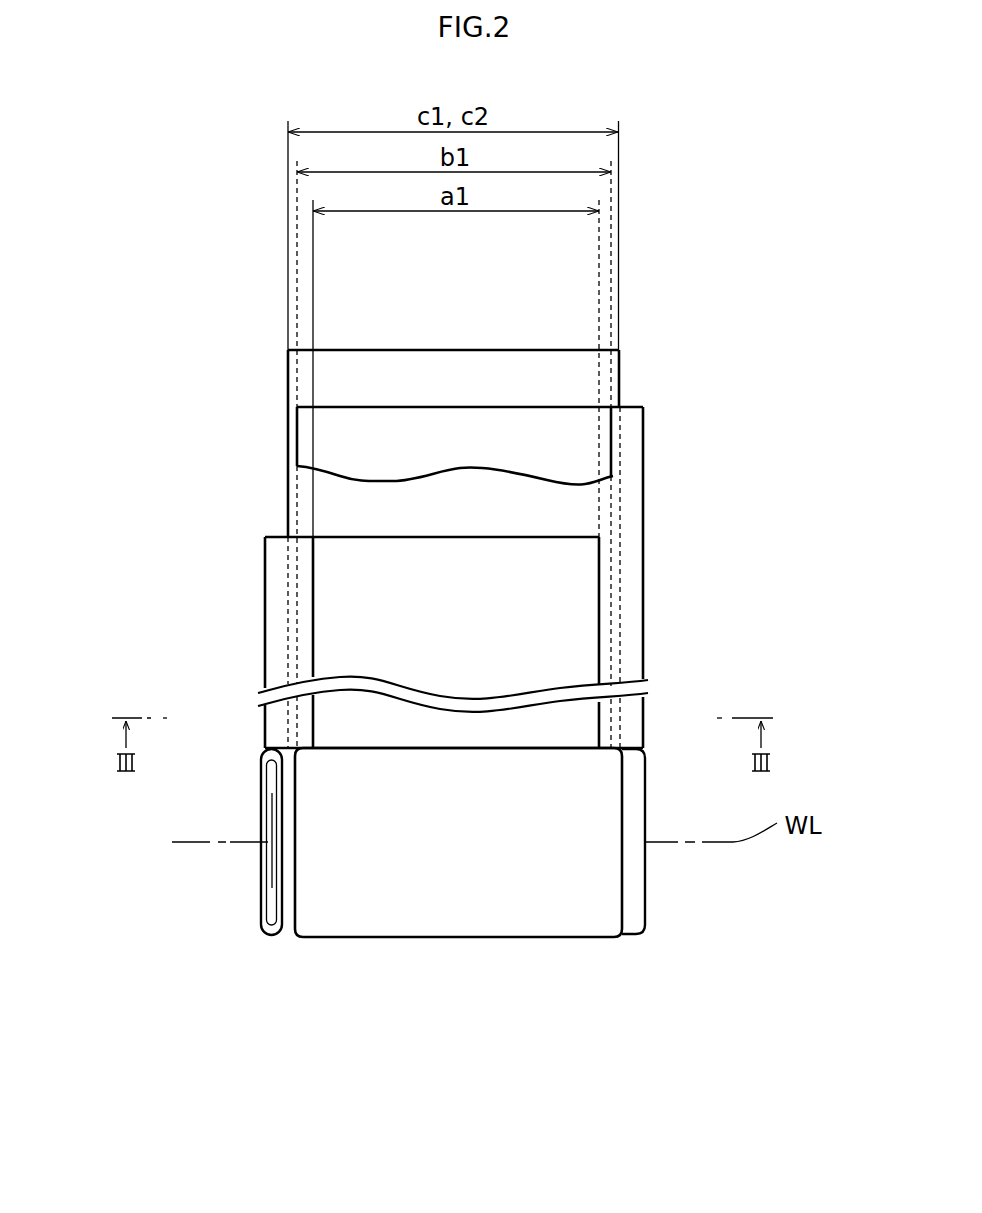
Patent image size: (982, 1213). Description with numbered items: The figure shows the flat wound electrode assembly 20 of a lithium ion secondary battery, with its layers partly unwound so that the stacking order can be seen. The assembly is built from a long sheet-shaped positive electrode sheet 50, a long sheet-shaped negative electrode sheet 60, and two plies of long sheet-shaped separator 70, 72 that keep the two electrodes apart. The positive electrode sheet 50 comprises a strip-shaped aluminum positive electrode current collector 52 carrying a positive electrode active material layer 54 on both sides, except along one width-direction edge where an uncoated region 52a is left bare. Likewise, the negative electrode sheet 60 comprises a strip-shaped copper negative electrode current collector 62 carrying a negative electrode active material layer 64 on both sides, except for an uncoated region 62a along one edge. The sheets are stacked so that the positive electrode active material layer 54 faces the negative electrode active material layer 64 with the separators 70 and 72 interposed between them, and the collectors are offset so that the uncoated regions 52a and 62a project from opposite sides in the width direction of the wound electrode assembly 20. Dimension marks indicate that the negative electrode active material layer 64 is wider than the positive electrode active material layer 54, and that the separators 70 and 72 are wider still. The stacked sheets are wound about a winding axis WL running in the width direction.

The wound electrode assembly 20 is at (489, 911).
The positive electrode sheet 50 is at (373, 711).
The positive electrode current collector 52 is at (442, 535).
The uncoated region 52a is at (280, 657).
The positive electrode active material layer 54 is at (347, 635).
The negative electrode sheet 60 is at (527, 624).
The negative electrode current collector 62 is at (442, 404).
The uncoated region 62a is at (627, 463).
The negative electrode active material layer 64 is at (546, 421).
The separator 70 is at (302, 512).
The separator 72 is at (307, 377).